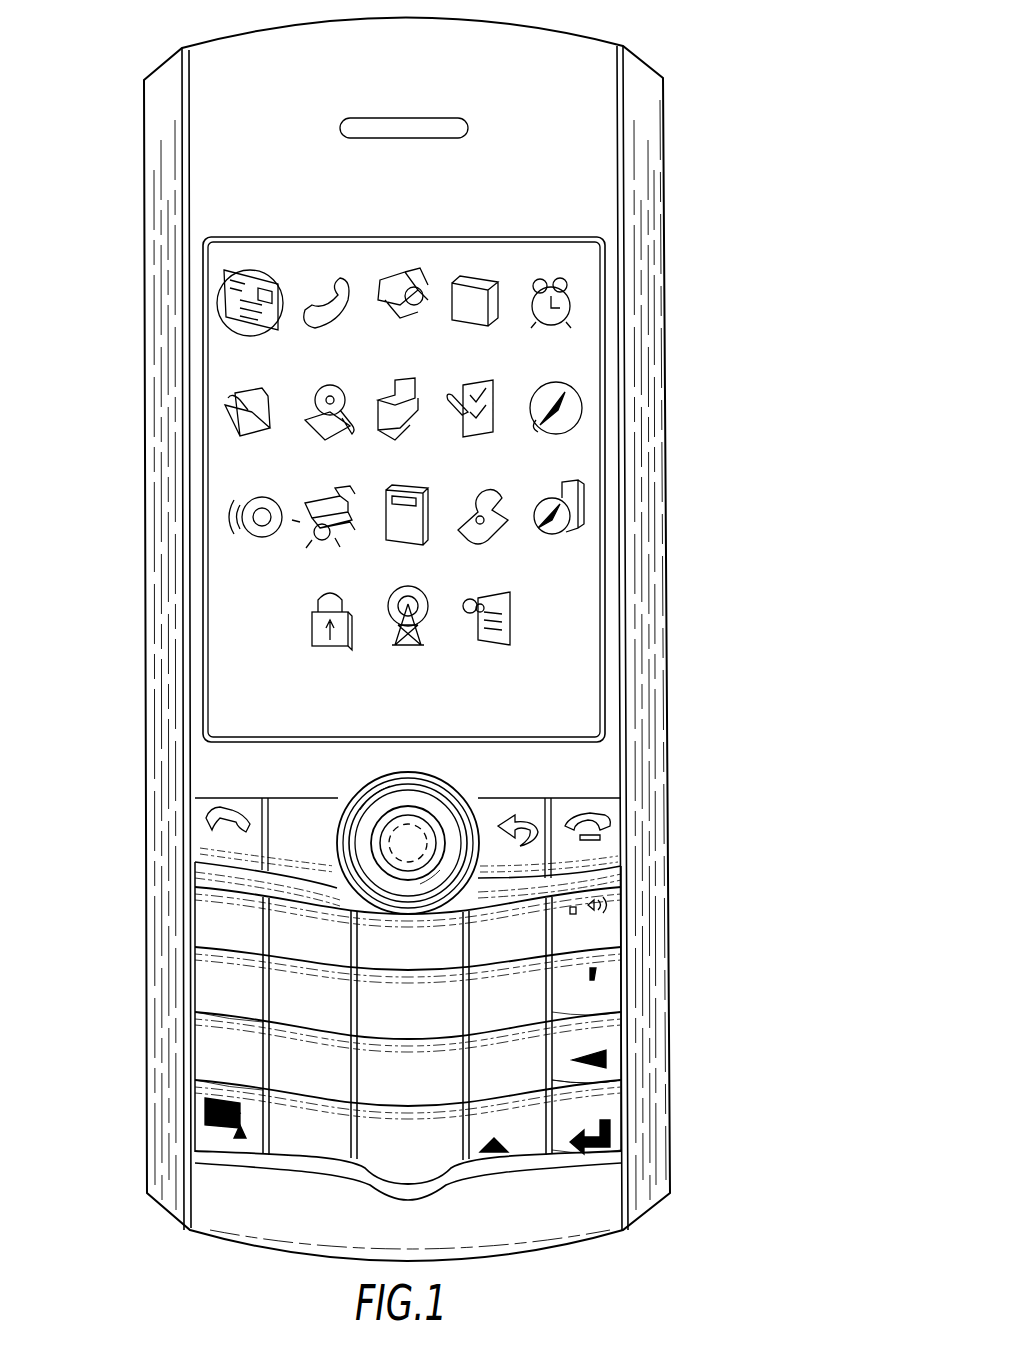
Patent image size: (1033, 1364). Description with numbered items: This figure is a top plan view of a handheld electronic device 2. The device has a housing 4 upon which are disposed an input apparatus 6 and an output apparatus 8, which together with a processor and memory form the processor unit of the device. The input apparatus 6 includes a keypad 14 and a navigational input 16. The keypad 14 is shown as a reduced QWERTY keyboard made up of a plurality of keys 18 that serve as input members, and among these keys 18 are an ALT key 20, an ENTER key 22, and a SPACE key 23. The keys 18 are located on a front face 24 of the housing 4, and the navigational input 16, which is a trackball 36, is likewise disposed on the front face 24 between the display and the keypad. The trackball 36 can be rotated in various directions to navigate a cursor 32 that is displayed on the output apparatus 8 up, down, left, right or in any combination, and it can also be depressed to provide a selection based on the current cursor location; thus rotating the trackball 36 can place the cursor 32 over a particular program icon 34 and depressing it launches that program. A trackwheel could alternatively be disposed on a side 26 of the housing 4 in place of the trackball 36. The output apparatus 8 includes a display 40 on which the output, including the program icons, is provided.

The handheld electronic device 2 is at (694, 76).
The housing 4 is at (668, 893).
The input apparatus 6 is at (200, 838).
The output apparatus 8 is at (583, 578).
The keypad 14 is at (627, 974).
The navigational input 16 is at (423, 808).
The keys 18 is at (200, 1043).
The ALT key 20 is at (205, 1166).
The ENTER key 22 is at (625, 1082).
The SPACE key 23 is at (454, 1182).
The front face 24 is at (612, 768).
The side 26 is at (668, 309).
The cursor 32 is at (258, 276).
The program icon 34 is at (250, 327).
The trackball 36 is at (387, 818).
The display 40 is at (468, 484).